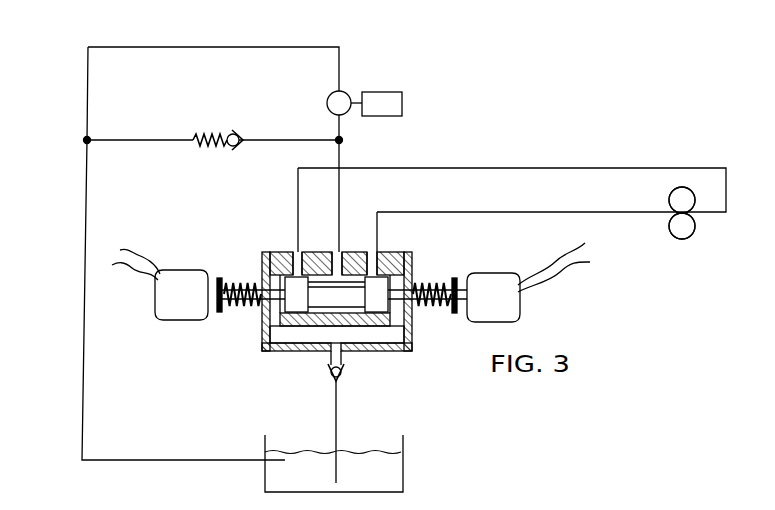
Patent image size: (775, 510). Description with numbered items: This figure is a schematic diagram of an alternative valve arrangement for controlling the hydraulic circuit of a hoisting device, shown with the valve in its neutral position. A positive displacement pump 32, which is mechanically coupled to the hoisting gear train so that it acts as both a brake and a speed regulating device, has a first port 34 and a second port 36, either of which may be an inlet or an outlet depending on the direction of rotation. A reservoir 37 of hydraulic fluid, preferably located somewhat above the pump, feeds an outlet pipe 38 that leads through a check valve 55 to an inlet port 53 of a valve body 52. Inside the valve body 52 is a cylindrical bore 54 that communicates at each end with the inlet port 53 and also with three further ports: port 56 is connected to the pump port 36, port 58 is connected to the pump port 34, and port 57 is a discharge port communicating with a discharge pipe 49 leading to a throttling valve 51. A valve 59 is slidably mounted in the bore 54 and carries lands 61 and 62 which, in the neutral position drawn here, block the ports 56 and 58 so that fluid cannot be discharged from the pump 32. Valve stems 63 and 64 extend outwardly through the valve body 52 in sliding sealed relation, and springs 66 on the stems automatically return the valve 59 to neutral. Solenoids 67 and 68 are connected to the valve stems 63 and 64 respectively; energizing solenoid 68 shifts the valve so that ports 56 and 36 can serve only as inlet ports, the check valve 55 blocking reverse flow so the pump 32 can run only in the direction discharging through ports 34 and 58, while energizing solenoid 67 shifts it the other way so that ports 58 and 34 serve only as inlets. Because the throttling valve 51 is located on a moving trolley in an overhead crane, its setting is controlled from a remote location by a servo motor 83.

The positive displacement pump 32 is at (675, 221).
The first port 34 is at (696, 218).
The second port 36 is at (670, 207).
The reservoir 37 is at (392, 473).
The outlet pipe 38 is at (336, 425).
The common discharge pipe 49 is at (341, 160).
The throttling valve 51 is at (342, 92).
The valve body 52 is at (300, 352).
The inlet port 53 is at (342, 360).
The cylindrical bore 54 is at (345, 278).
The check valve 55 is at (331, 380).
The port 56 is at (382, 252).
The discharge port 57 is at (336, 252).
The port 58 is at (297, 252).
The valve 59 is at (262, 336).
The land 61 is at (414, 348).
The land 62 is at (268, 255).
The valve stem 63 is at (430, 280).
The valve stem 64 is at (243, 280).
The springs 66 is at (240, 311).
The solenoid 67 is at (510, 305).
The solenoid 68 is at (176, 277).
The servo motor 83 is at (402, 103).